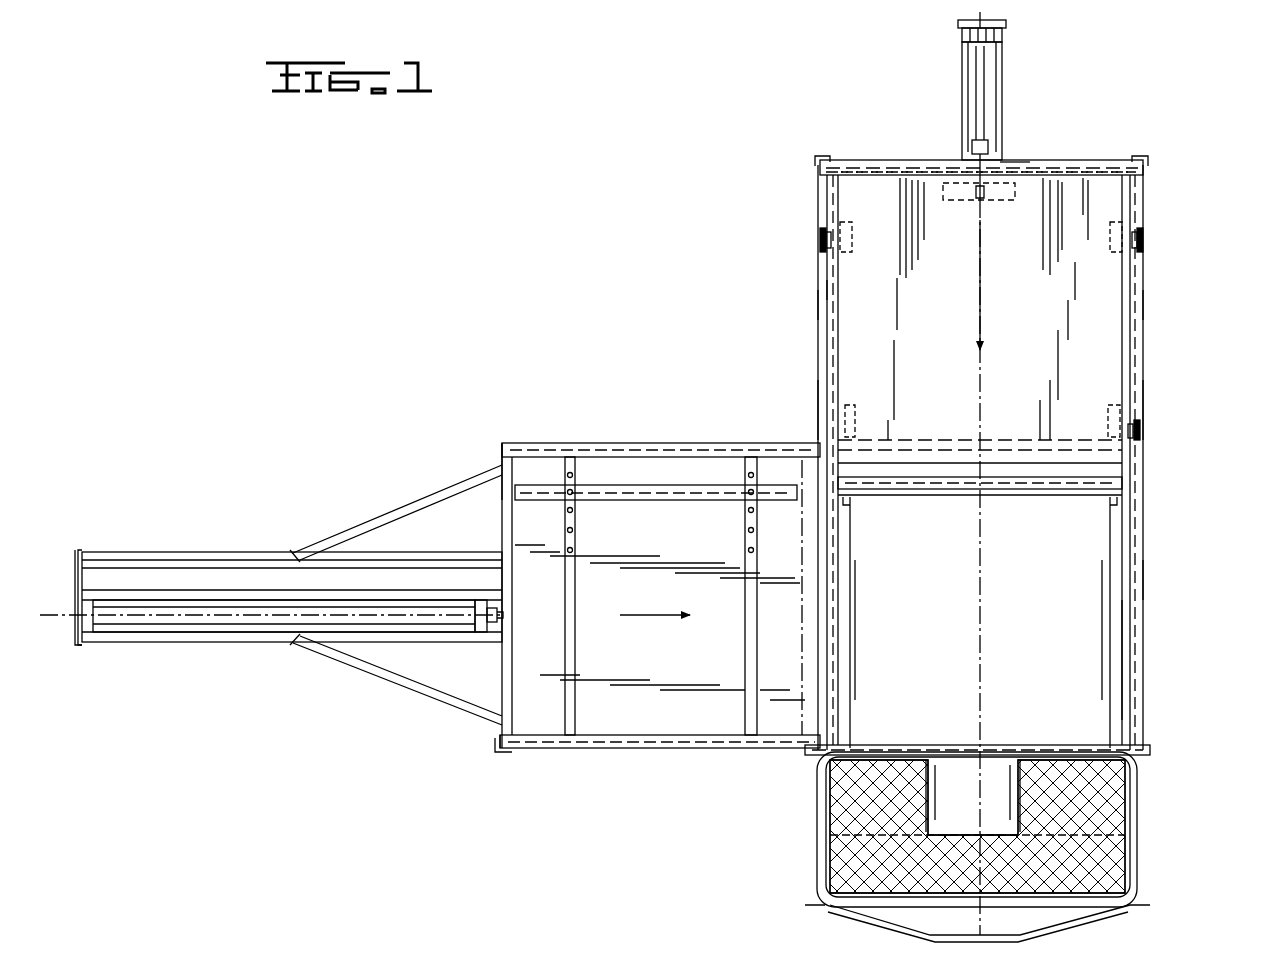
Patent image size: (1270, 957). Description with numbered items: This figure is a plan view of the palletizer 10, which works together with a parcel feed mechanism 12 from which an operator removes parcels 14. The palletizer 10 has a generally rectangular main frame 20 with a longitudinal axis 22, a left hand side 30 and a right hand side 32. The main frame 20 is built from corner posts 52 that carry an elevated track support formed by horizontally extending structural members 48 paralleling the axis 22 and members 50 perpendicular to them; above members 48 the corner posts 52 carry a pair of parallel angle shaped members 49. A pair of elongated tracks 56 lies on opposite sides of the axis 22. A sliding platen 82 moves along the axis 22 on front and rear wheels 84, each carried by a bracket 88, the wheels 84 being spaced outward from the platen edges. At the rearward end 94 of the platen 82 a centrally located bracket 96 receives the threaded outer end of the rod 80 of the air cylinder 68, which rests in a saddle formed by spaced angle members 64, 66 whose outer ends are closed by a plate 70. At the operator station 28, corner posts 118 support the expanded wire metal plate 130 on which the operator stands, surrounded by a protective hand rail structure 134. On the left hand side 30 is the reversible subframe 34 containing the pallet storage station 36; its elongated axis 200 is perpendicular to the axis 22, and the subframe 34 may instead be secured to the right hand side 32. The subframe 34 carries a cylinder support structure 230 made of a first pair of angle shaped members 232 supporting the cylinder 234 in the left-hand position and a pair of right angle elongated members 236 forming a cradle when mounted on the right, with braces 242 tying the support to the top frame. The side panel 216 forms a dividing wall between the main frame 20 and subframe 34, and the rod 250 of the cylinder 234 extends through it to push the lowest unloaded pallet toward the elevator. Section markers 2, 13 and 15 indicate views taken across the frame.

The section line 2- 2 is at (260, 920).
The palletizer 10 is at (345, 718).
The parcel feed mechanism 12 is at (1208, 30).
The section line 13- 13 is at (1018, 400).
The parcels 14 is at (818, 465).
The section line 15- 15 is at (820, 725).
The main frame 20 is at (816, 362).
The longitudinal axis 22 is at (960, 208).
The operator station 28 is at (1112, 820).
The left hand side 30 is at (818, 385).
The right hand side 32 is at (1143, 402).
The subframe 34 is at (500, 750).
The pallet storage station 36 is at (672, 712).
The horizontally extending structural members 48 is at (818, 306).
The angle shaped members 49 is at (832, 283).
The horizontally extending structural members 50 is at (1010, 162).
The corner posts 52 is at (816, 158).
The tracks 56 is at (1130, 684).
The angle member 64 is at (960, 108).
The angle member 66 is at (1002, 100).
The air cylinder 68 is at (988, 72).
The plate 70 is at (1006, 26).
The rod 80 is at (1040, 158).
The platen 82 is at (955, 567).
The wheels 84 is at (820, 240).
The bracket 88 is at (852, 252).
The rearward end 94 is at (890, 222).
The bracket 96 is at (1012, 200).
The corner posts 118 is at (818, 887).
The expanded wire metal plate 130 is at (1105, 862).
The hand rail structure 134 is at (835, 920).
The elongated axis 200 is at (78, 590).
The side panel 216 is at (500, 520).
The cylinder support structure 230 is at (197, 640).
The angle shaped members 232 is at (238, 596).
The cylinder 234 is at (272, 630).
The right angle elongated members 236 is at (150, 565).
The braces 242 is at (395, 508).
The rod 250 is at (500, 620).